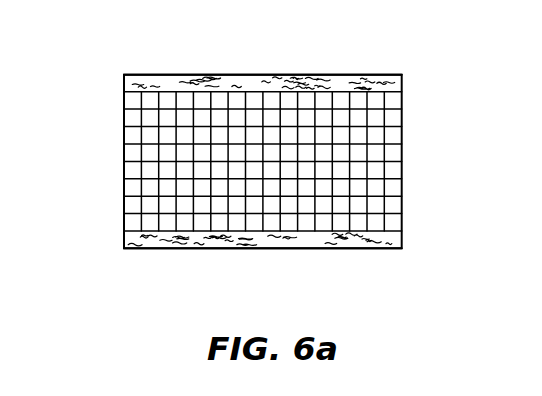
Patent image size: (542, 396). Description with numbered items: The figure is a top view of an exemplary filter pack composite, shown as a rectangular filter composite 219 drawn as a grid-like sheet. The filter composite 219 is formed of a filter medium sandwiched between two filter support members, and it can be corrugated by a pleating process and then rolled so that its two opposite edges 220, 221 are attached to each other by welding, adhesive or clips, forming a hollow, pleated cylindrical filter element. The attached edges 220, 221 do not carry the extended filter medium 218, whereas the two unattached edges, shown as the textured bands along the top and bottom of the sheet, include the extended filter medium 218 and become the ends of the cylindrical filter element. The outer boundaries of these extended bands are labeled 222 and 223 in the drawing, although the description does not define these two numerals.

The extended filter medium 218 is at (287, 85).
The filter composite 219 is at (370, 169).
The edge 220 is at (402, 119).
The edge 221 is at (123, 169).
The top surface 222 is at (185, 75).
The bottom surface 223 is at (188, 247).